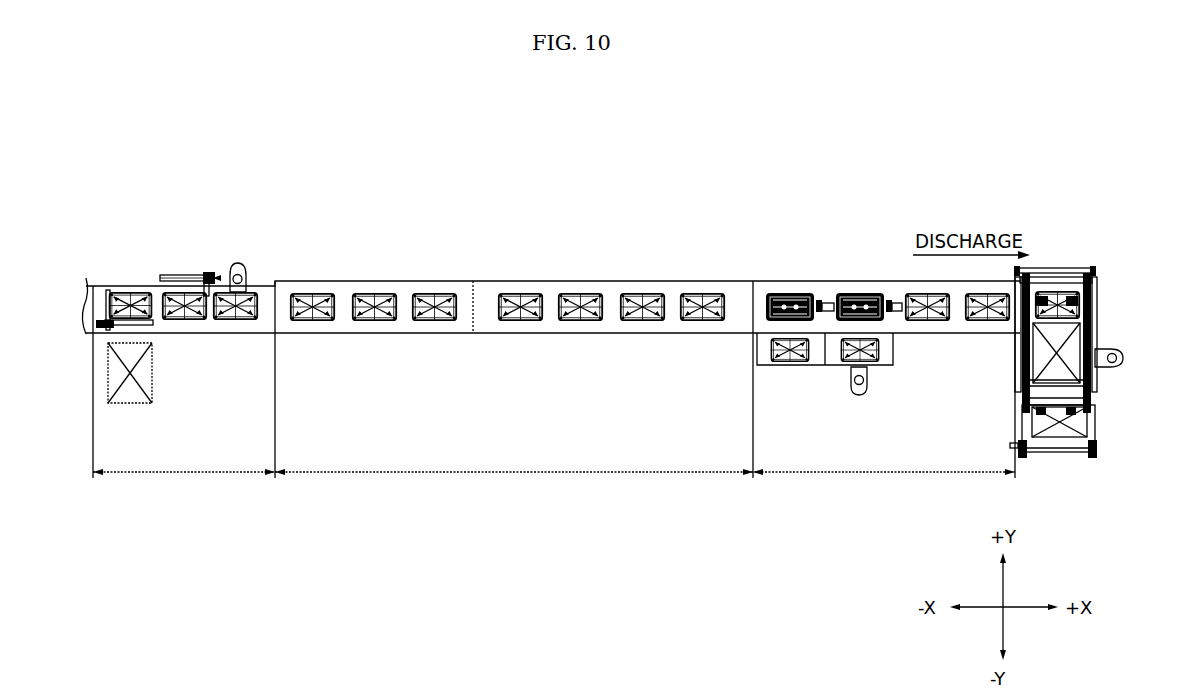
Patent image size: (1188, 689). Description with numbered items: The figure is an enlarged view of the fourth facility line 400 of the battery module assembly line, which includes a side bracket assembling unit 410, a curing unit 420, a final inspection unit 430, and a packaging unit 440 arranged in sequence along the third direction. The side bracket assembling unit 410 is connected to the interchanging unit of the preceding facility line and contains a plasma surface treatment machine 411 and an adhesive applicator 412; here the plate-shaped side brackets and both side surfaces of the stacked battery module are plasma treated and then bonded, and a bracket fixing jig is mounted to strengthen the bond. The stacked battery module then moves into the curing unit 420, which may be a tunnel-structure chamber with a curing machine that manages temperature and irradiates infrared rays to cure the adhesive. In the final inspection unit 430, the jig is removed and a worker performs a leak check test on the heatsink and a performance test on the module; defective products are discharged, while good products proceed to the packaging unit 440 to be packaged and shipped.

The fourth facility line 400 is at (273, 191).
The side bracket assembling unit 410 is at (177, 367).
The plasma surface treatment machine 411 is at (153, 378).
The adhesive applicator 412 is at (188, 273).
The curing unit 420 is at (507, 398).
The final inspection unit 430 is at (888, 398).
The packaging unit 440 is at (1095, 268).